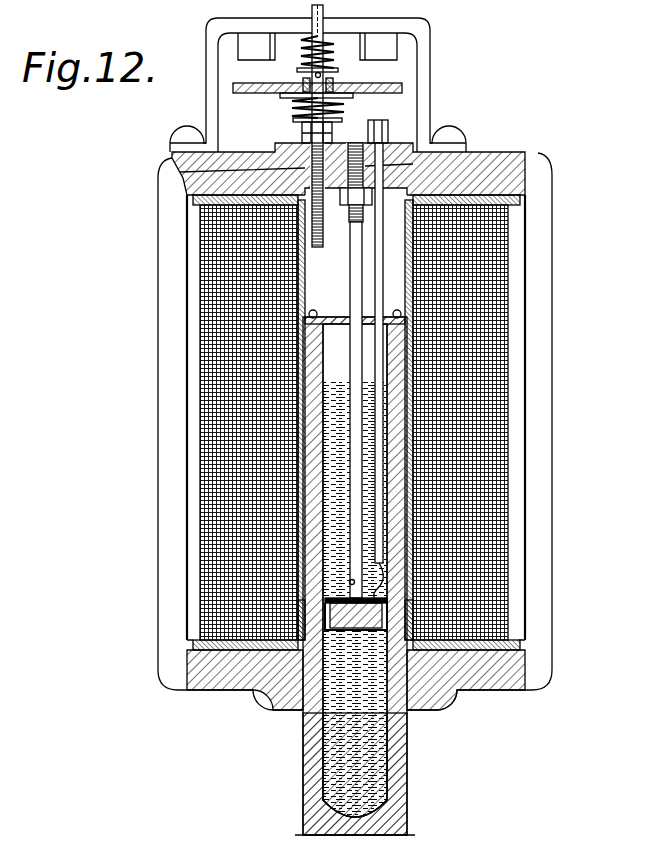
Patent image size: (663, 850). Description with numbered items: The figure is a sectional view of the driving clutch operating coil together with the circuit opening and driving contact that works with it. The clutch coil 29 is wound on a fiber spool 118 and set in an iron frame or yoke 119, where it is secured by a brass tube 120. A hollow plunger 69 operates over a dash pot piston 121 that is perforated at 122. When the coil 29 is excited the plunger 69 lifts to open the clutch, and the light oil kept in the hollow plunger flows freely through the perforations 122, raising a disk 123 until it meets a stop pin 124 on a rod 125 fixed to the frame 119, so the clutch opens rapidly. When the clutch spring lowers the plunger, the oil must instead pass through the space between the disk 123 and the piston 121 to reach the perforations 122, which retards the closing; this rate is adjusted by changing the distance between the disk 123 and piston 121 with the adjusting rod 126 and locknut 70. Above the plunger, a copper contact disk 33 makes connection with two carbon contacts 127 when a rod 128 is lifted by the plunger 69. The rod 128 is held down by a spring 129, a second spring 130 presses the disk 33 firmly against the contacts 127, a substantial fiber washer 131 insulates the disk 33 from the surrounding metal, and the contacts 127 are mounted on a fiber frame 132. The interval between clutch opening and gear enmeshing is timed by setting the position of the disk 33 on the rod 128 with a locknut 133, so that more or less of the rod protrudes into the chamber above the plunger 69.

The clutch coil 29 is at (208, 246).
The contact disk 33 is at (402, 88).
The hollow plunger 69 is at (400, 768).
The locknut 70 is at (384, 130).
The fiber spool 118 is at (298, 307).
The iron frame or yoke 119 is at (165, 415).
The brass tube 120 is at (407, 278).
The dash pot piston 121 is at (326, 614).
The perforations 122 is at (303, 622).
The disk 123 is at (333, 620).
The stop pin 124 is at (330, 597).
The rod 125 is at (410, 443).
The adjusting rod 126 is at (384, 470).
The carbon contacts 127 is at (268, 60).
The rod 128 is at (181, 172).
The spring 129 is at (325, 38).
The spring 130 is at (298, 110).
The fiber washer 131 is at (280, 96).
The fiber frame 132 is at (207, 98).
The locknut 133 is at (304, 135).